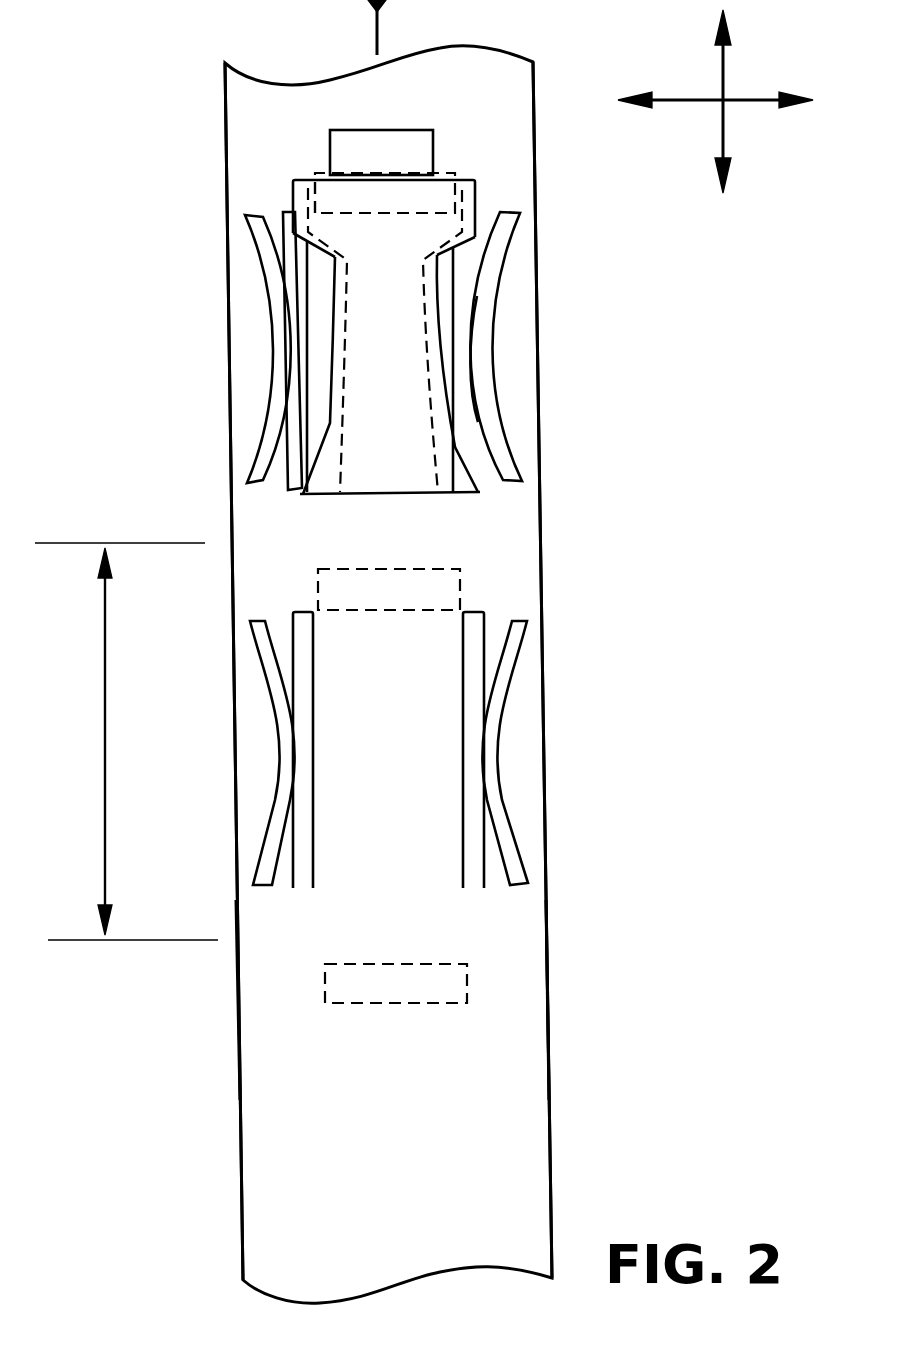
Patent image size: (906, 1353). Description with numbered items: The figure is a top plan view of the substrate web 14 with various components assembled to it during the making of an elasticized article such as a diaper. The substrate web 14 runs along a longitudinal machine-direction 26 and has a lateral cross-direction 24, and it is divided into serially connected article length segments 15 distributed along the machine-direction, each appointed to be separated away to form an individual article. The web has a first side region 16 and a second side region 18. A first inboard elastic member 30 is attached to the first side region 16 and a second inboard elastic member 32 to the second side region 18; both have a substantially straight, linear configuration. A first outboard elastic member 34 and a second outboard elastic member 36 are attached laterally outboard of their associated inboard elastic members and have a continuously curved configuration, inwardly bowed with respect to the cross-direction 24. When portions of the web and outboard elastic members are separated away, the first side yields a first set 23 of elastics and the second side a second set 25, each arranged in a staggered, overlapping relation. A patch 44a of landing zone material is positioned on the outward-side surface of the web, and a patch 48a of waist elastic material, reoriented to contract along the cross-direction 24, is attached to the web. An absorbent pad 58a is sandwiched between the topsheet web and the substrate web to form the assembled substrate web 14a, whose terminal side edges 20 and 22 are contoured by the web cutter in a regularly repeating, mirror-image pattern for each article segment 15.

The substrate web 14 is at (243, 1128).
The assembled substrate web 14a is at (243, 350).
The article length segment 15 is at (126, 741).
The first side region 16 is at (248, 792).
The second side region 18 is at (545, 772).
The terminal side edge 20 is at (240, 980).
The terminal side edge 22 is at (550, 1001).
The first set of elastics 23 is at (235, 718).
The lateral cross-direction 24 is at (680, 103).
The second set of elastic members 25 is at (546, 779).
The longitudinal machine-direction 26 is at (722, 65).
The first inboard elastic member 30 is at (312, 878).
The second inboard elastic member 32 is at (462, 652).
The first outboard elastic member 34 is at (258, 618).
The second outboard elastic member 36 is at (522, 885).
The patch of landing zone material 44a is at (437, 572).
The patch of waist elastic material 48a is at (408, 130).
The absorbent pad 58a is at (322, 200).